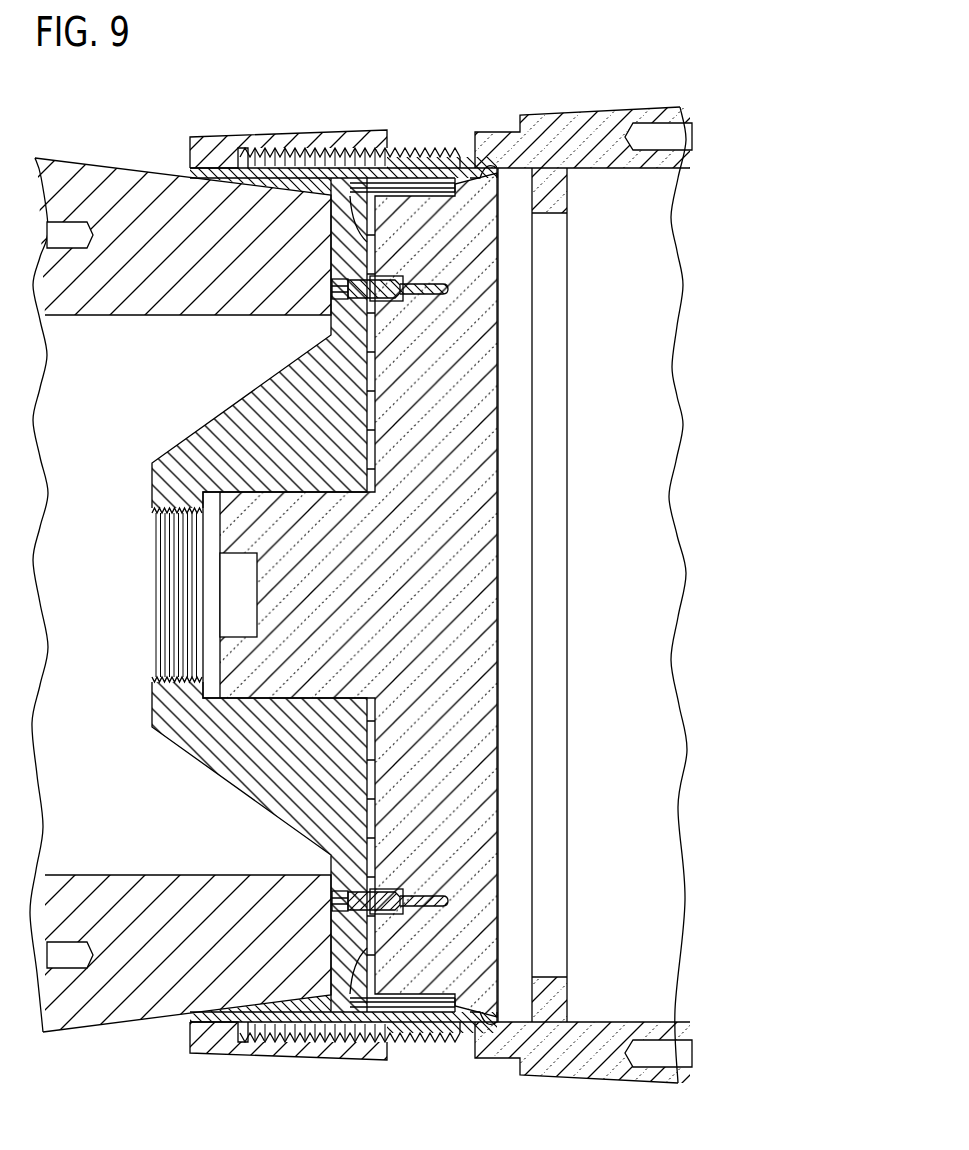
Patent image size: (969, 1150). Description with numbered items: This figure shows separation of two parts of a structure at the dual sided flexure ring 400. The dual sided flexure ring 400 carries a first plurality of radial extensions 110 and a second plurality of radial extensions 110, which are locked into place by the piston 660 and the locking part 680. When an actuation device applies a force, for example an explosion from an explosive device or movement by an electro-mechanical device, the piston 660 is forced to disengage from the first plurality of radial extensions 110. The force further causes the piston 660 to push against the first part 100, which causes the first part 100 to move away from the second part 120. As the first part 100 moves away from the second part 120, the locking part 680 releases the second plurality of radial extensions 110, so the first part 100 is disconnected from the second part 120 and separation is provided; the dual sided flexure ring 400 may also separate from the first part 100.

The first part 100 is at (583, 113).
The radial extensions 110 is at (430, 172).
The second part 120 is at (98, 166).
The dual sided flexure ring 400 is at (267, 400).
The piston 660 is at (463, 580).
The locking part 680 is at (270, 133).